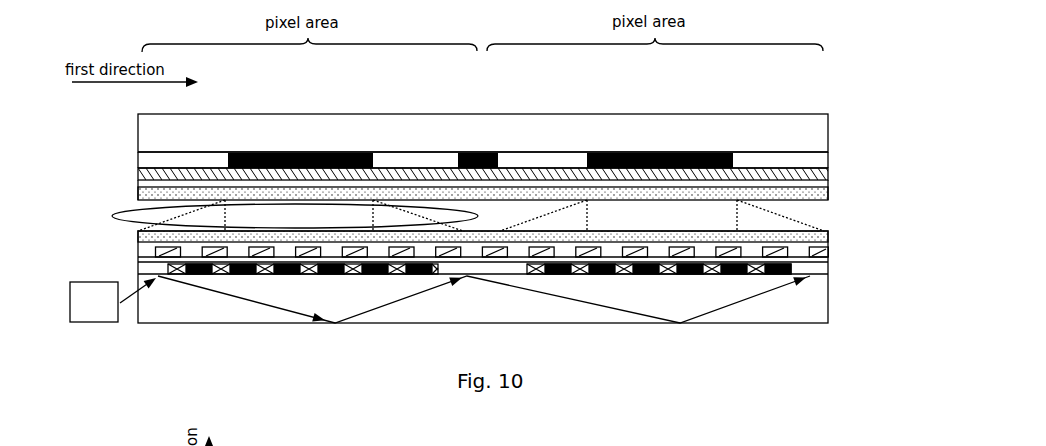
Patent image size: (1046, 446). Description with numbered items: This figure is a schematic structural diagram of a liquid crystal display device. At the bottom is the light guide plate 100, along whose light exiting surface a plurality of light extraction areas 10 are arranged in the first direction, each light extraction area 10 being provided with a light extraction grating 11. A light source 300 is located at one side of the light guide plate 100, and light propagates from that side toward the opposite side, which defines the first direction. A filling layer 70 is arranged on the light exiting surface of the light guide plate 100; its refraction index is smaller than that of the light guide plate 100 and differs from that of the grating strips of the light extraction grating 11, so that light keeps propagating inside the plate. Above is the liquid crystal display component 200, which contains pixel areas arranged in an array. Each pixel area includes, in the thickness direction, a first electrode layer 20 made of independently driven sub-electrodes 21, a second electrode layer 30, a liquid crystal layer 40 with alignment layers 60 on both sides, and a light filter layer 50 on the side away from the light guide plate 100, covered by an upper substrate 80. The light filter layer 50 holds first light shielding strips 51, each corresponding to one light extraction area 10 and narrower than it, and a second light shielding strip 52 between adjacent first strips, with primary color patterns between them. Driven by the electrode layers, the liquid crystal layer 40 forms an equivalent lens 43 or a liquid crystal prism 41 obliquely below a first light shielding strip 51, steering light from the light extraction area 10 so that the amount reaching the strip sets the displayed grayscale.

The upper substrate 80 is at (788, 130).
The light filter layer 50 is at (830, 160).
The first light shielding strip 51 is at (310, 152).
The second light shielding strip 52 is at (482, 152).
The second electrode layer 30 is at (813, 173).
The alignment layer 60 is at (824, 194).
The liquid crystal display component 200 is at (907, 122).
The liquid crystal layer 40 is at (481, 215).
The equivalent lens 43 is at (130, 207).
The liquid crystal prism 41 is at (810, 227).
The filling layer 70 is at (148, 262).
The light extraction area 10 is at (168, 267).
The sub-electrode 21 is at (830, 252).
The first electrode layer 20 is at (875, 247).
The light source 300 is at (113, 300).
The light guide plate 100 is at (830, 298).
The light extraction grating 11 is at (740, 275).